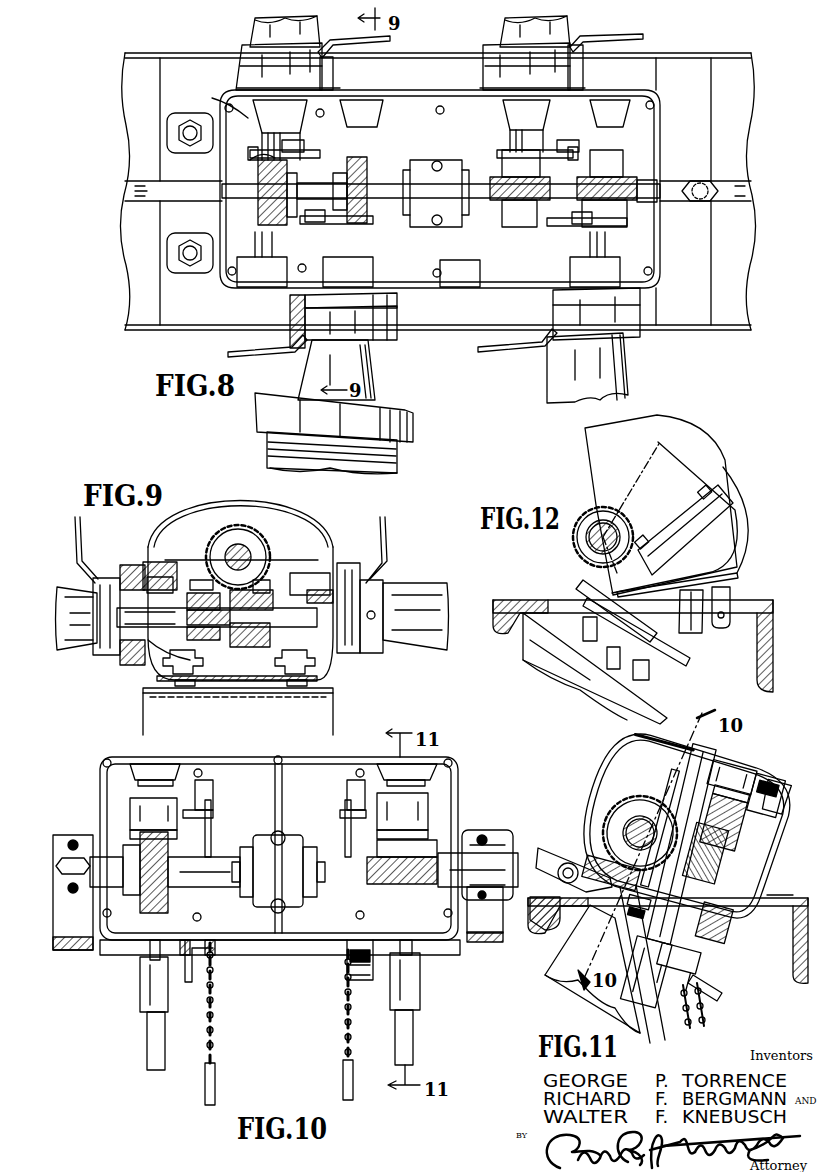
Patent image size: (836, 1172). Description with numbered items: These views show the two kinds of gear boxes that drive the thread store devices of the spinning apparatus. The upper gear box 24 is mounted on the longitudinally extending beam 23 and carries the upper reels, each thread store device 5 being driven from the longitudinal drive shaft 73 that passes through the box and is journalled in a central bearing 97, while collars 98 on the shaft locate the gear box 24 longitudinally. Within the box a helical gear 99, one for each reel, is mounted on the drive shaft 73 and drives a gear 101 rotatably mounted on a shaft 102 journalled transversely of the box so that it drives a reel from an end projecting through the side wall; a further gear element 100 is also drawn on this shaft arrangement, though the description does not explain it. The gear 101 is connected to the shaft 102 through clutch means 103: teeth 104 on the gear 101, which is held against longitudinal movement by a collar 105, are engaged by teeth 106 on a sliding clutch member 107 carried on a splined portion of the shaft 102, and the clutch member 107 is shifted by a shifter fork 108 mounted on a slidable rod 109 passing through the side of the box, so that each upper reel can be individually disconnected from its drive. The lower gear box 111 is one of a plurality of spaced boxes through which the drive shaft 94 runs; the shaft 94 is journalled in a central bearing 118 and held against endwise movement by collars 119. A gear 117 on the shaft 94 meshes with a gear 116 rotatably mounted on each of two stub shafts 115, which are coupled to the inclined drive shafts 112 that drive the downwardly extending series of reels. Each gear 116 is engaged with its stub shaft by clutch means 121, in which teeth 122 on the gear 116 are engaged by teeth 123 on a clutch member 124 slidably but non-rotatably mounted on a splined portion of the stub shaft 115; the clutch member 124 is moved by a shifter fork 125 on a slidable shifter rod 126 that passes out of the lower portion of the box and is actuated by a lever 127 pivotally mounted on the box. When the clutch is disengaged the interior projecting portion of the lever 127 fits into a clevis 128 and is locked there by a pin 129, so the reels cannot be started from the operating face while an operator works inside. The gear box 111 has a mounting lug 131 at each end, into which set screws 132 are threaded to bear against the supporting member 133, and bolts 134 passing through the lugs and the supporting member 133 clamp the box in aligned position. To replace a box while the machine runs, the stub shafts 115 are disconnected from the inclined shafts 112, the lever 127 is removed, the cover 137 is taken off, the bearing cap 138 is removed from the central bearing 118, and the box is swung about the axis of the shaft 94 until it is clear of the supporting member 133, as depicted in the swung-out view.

In FIG. 8, the thread store device 5 is at (397, 462).
In FIG. 8, the longitudinally extending beam 23 is at (133, 103).
In FIG. 8, the gear box 24 is at (446, 89).
In FIG. 9, the gear box 24 is at (237, 493).
In FIG. 8, the drive shaft 73 is at (150, 203).
In FIG. 9, the drive shaft 73 is at (246, 545).
In FIG. 12, the drive shaft 94 is at (583, 567).
In FIG. 10, the drive shaft 94 is at (232, 855).
In FIG. 11, the drive shaft 94 is at (628, 824).
In FIG. 8, the central bearing 97 is at (448, 196).
In FIG. 8, the collar 98 is at (478, 205).
In FIG. 8, the helical gear 99 is at (256, 195).
In FIG. 9, the helical gear 99 is at (252, 560).
In FIG. 8, the gear 100 is at (457, 175).
In FIG. 8, the gear 101 is at (502, 165).
In FIG. 9, the gear 101 is at (238, 648).
In FIG. 8, the shaft 102 is at (357, 122).
In FIG. 9, the shaft 102 is at (304, 612).
In FIG. 8, the clutch means 103 is at (664, 287).
In FIG. 9, the clutch means 103 is at (185, 640).
In FIG. 8, the teeth 104 is at (588, 203).
In FIG. 9, the teeth 104 is at (225, 690).
In FIG. 8, the collar 105 is at (375, 158).
In FIG. 9, the collar 105 is at (268, 690).
In FIG. 8, the teeth 106 is at (368, 222).
In FIG. 9, the teeth 106 is at (208, 628).
In FIG. 8, the sliding clutch member 107 is at (258, 150).
In FIG. 9, the sliding clutch member 107 is at (188, 572).
In FIG. 8, the shifter fork 108 is at (445, 209).
In FIG. 9, the shifter fork 108 is at (198, 578).
In FIG. 8, the slidable rod 109 is at (356, 122).
In FIG. 9, the slidable rod 109 is at (148, 560).
In FIG. 12, the gear box 111 is at (736, 464).
In FIG. 10, the gear box 111 is at (130, 750).
In FIG. 11, the gear box 111 is at (613, 741).
In FIG. 10, the inclined drive shaft 112 is at (148, 1035).
In FIG. 11, the inclined drive shaft 112 is at (622, 1000).
In FIG. 12, the stub shaft 115 is at (694, 634).
In FIG. 10, the stub shaft 115 is at (150, 950).
In FIG. 11, the stub shaft 115 is at (705, 866).
In FIG. 10, the gear 116 is at (366, 866).
In FIG. 11, the gear 116 is at (740, 885).
In FIG. 12, the gear 117 is at (591, 501).
In FIG. 10, the gear 117 is at (185, 852).
In FIG. 11, the gear 117 is at (630, 800).
In FIG. 10, the central bearing 118 is at (296, 845).
In FIG. 10, the collar 119 is at (243, 850).
In FIG. 10, the clutch means 121 is at (183, 768).
In FIG. 11, the clutch means 121 is at (773, 803).
In FIG. 10, the teeth 122 is at (432, 845).
In FIG. 11, the teeth 122 is at (757, 848).
In FIG. 10, the teeth 123 is at (135, 833).
In FIG. 11, the teeth 123 is at (758, 833).
In FIG. 10, the clutch member 124 is at (132, 805).
In FIG. 11, the clutch member 124 is at (705, 806).
In FIG. 10, the shifter fork 125 is at (212, 784).
In FIG. 11, the shifter fork 125 is at (727, 770).
In FIG. 12, the shifter rod 126 is at (628, 622).
In FIG. 10, the shifter rod 126 is at (214, 812).
In FIG. 11, the shifter rod 126 is at (690, 787).
In FIG. 10, the lever 127 is at (348, 970).
In FIG. 11, the lever 127 is at (562, 845).
In FIG. 12, the clevis 128 is at (724, 628).
In FIG. 10, the clevis 128 is at (213, 962).
In FIG. 11, the clevis 128 is at (700, 964).
In FIG. 10, the pin 129 is at (345, 1080).
In FIG. 11, the pin 129 is at (670, 1005).
In FIG. 12, the mounting lug 131 is at (687, 525).
In FIG. 10, the mounting lug 131 is at (80, 948).
In FIG. 12, the set screw 132 is at (700, 494).
In FIG. 10, the set screw 132 is at (75, 840).
In FIG. 12, the supporting member 133 is at (508, 620).
In FIG. 10, the supporting member 133 is at (490, 945).
In FIG. 11, the supporting member 133 is at (786, 908).
In FIG. 10, the bolt 134 is at (88, 868).
In FIG. 11, the cover 137 is at (657, 734).
In FIG. 10, the bearing cap 138 is at (298, 870).